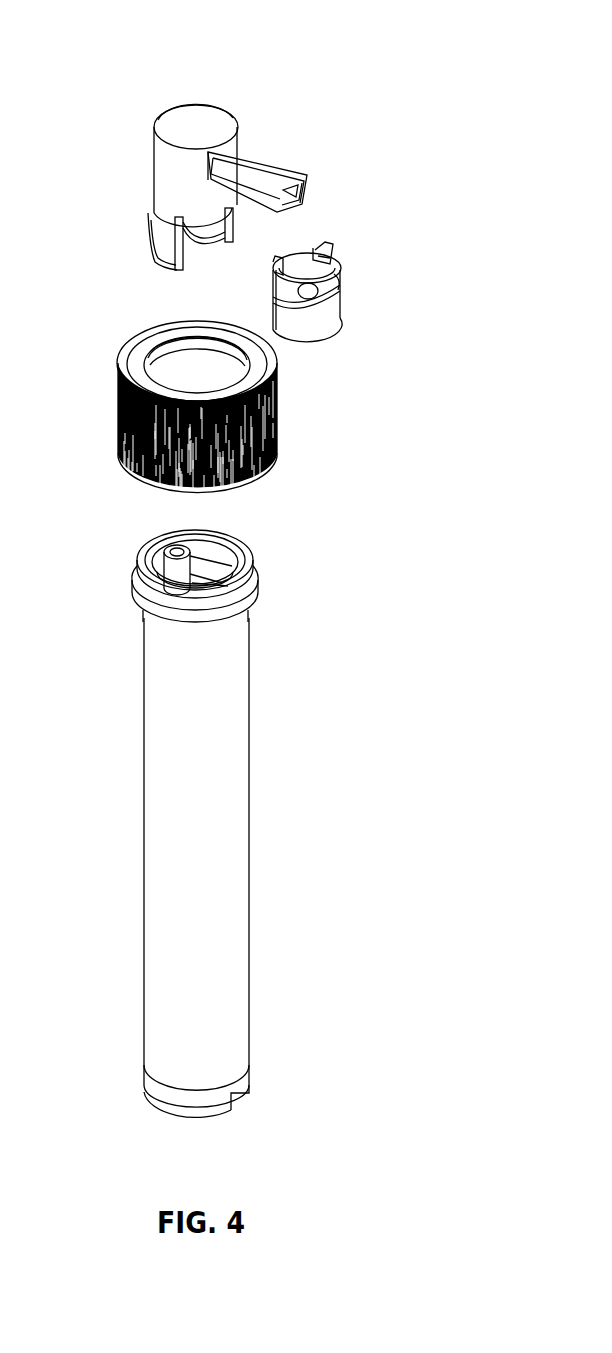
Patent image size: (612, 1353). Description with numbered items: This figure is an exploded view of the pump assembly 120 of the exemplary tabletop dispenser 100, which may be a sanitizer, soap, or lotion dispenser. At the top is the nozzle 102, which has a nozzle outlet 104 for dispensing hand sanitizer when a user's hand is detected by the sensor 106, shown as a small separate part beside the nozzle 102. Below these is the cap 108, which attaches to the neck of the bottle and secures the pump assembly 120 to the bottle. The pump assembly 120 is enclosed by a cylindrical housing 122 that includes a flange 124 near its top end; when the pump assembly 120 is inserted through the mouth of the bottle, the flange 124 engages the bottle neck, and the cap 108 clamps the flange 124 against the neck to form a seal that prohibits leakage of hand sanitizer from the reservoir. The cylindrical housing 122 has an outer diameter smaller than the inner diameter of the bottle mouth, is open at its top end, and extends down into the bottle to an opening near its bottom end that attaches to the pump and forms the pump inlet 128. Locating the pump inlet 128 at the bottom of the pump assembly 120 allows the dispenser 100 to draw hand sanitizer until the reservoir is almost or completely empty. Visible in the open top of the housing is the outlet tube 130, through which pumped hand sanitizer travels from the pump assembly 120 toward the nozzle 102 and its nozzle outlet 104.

The tabletop dispenser 100 is at (118, 113).
The nozzle 102 is at (243, 153).
The nozzle outlet 104 is at (298, 196).
The sensor 106 is at (345, 327).
The cap 108 is at (118, 410).
The pump assembly 120 is at (373, 596).
The cylindrical housing 122 is at (172, 853).
The flange 124 is at (136, 598).
The pump inlet 128 is at (246, 1102).
The outlet tube 130 is at (193, 552).